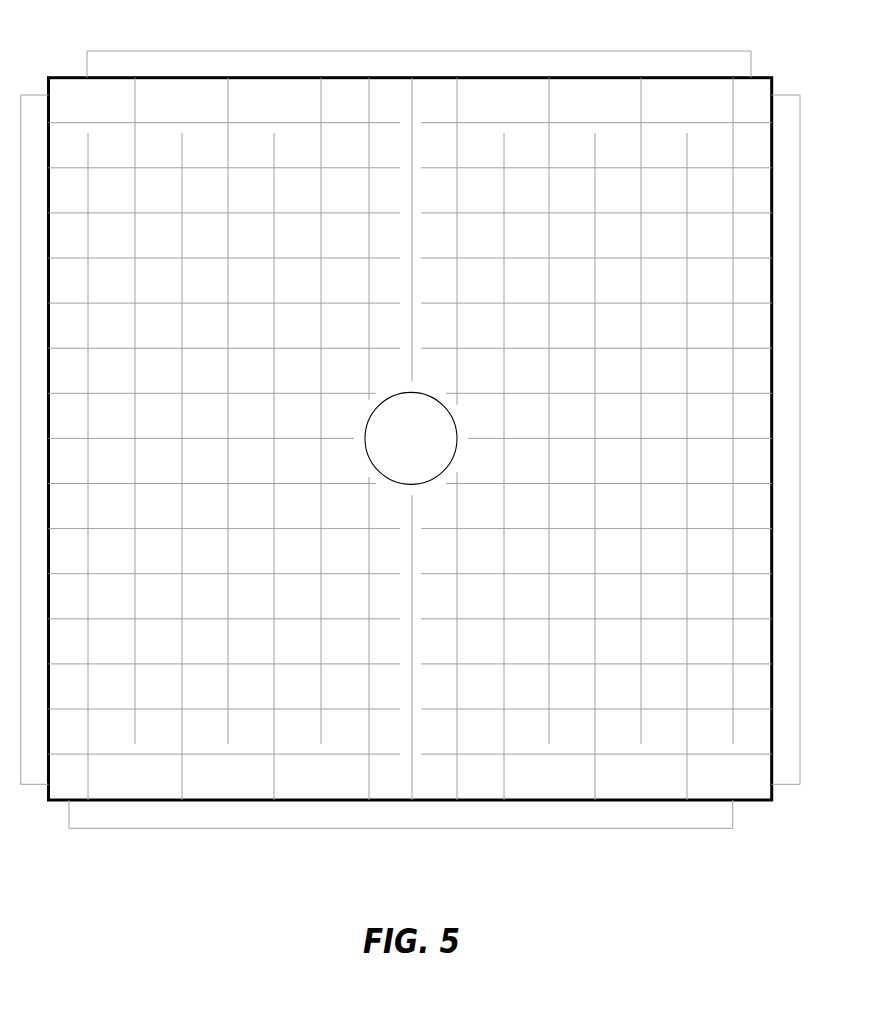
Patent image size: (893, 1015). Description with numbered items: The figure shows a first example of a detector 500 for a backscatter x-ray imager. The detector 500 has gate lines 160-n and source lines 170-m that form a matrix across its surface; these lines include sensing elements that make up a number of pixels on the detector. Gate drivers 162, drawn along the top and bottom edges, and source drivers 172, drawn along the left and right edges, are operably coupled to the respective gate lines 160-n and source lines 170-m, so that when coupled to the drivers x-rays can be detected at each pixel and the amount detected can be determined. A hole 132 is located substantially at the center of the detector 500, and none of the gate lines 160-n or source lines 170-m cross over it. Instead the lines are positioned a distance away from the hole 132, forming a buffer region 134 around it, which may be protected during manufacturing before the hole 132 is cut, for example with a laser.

The detector 500 is at (243, 20).
The gate lines 160-n is at (138, 104).
The source lines 170-m is at (258, 854).
The gate drivers 162 is at (470, 824).
The source drivers 172 is at (800, 392).
The hole 132 is at (428, 460).
The buffer region 134 is at (463, 420).